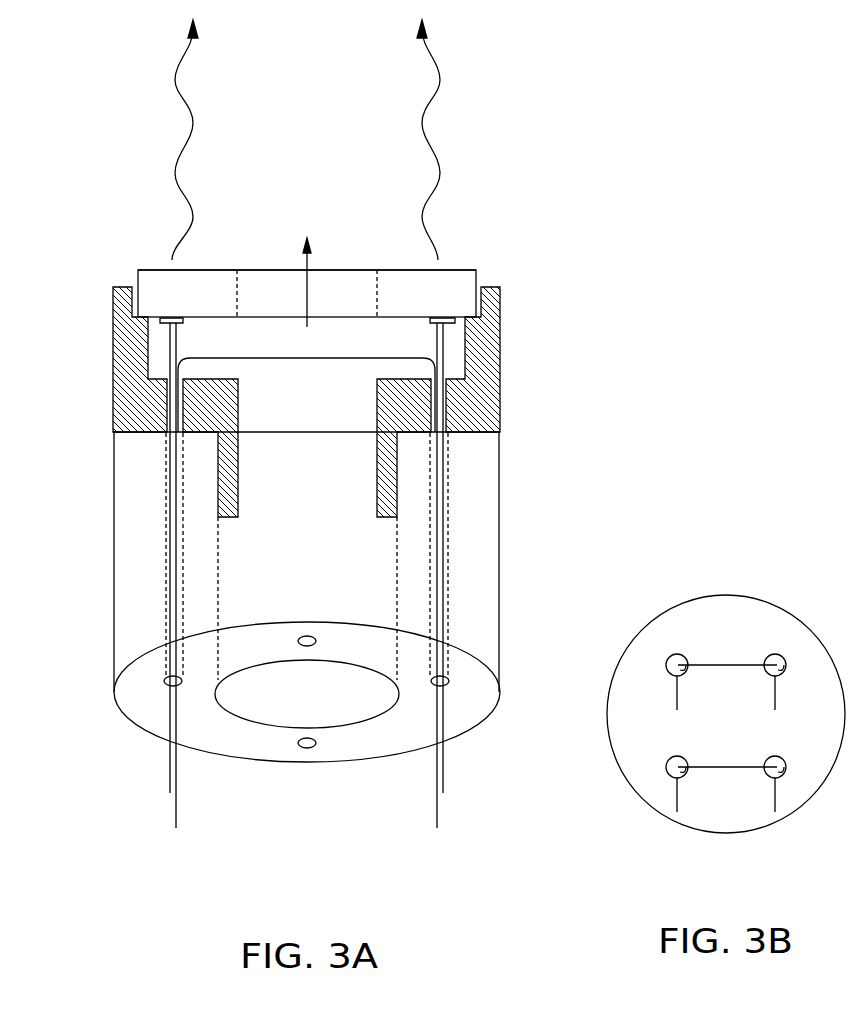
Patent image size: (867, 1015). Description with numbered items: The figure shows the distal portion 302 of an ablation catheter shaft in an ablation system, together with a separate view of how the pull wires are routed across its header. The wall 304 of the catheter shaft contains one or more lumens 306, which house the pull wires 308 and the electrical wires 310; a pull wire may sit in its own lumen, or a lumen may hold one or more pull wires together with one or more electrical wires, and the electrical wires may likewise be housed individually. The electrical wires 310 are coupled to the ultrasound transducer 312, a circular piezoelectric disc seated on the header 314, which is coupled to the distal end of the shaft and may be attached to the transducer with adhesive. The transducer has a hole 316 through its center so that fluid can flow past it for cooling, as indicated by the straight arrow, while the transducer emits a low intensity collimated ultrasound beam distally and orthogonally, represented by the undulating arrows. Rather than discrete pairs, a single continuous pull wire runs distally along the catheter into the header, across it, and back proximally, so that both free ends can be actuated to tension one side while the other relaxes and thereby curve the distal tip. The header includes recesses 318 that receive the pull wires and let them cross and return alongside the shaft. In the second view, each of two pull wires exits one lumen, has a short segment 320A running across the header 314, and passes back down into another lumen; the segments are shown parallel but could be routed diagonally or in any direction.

In FIG. 3A, the distal portion 302 is at (502, 463).
In FIG. 3A, the wall 304 is at (133, 500).
In FIG. 3A, the lumens 306 is at (305, 634).
In FIG. 3A, the pull wires 308 is at (173, 808).
In FIG. 3A, the electrical wires 310 is at (168, 758).
In FIG. 3A, the ultrasound transducer 312 is at (148, 268).
In FIG. 3A, the header 314 is at (113, 331).
In FIG. 3B, the header 314 is at (760, 600).
In FIG. 3A, the hole 316 is at (340, 268).
In FIG. 3A, the recesses 318 is at (455, 343).
In FIG. 3A, the short segment 320A is at (283, 357).
In FIG. 3B, the short segment 320A is at (716, 762).